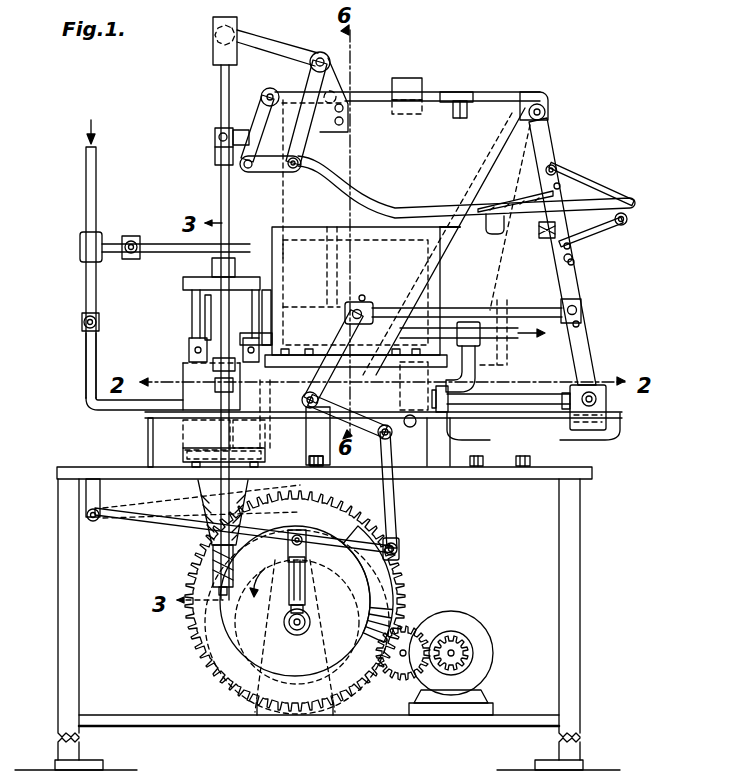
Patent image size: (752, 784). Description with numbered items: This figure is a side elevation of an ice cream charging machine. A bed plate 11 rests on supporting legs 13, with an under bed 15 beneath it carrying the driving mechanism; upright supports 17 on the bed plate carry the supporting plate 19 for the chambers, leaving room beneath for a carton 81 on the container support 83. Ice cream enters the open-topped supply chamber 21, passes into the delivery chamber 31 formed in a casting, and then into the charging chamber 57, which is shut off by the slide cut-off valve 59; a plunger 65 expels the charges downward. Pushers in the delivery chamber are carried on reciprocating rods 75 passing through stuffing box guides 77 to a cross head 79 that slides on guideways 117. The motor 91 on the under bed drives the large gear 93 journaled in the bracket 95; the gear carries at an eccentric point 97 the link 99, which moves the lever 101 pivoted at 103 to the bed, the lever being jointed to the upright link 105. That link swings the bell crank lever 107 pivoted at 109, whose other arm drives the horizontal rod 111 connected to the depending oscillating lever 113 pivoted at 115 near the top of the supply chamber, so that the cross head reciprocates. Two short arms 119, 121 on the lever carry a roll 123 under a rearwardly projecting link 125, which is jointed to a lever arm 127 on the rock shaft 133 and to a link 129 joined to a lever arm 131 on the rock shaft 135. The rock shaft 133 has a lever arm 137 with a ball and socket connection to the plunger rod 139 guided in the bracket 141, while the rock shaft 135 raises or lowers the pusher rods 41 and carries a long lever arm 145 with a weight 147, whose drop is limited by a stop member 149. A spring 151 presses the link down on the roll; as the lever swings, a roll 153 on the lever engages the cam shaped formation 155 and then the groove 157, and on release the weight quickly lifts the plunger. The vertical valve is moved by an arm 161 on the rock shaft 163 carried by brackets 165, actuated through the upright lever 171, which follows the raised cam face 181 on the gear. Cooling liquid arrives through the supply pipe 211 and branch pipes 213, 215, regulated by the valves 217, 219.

The bed plate 11 is at (90, 467).
The supporting legs 13 is at (62, 612).
The under bed or support 15 is at (392, 718).
The upright supports 17 is at (150, 427).
The supporting plate 19 is at (298, 413).
The supply chamber 21 is at (495, 110).
The delivery or forming chamber 31 is at (410, 368).
The pusher rods 41 is at (338, 256).
The charging chamber 57 is at (193, 372).
The slide cut-off valve 59 is at (262, 338).
The plunger 65 is at (212, 325).
The reciprocating rods 75 is at (523, 397).
The stuffing box guides 77 is at (447, 412).
The cross head 79 is at (604, 403).
The carton 81 is at (183, 435).
The container support 83 is at (237, 450).
The motor 91 is at (487, 643).
The large gear 93 is at (208, 662).
The bracket 95 is at (315, 606).
The eccentric mounting 97 is at (285, 622).
The link 99 is at (302, 580).
The lever 101 is at (323, 545).
The pivot 103 is at (93, 521).
The upright link 105 is at (394, 508).
The bell crank lever 107 is at (358, 412).
The pivot 109 is at (313, 397).
The horizontal rod 111 is at (457, 312).
The oscillating lever 113 is at (570, 267).
The pivot 115 is at (545, 111).
The guideways 117 is at (540, 422).
The short arm 119 is at (573, 187).
The short arm 121 is at (607, 228).
The roll 123 is at (628, 219).
The link 125 is at (393, 213).
The lever arm 127 is at (315, 172).
The link 129 is at (267, 172).
The lever arm 131 is at (258, 126).
The rock shaft 133 is at (320, 52).
The rock shaft 135 is at (264, 92).
The lever arm 137 is at (273, 50).
The plunger rod 139 is at (221, 82).
The bracket 141 is at (219, 156).
The long lever arm 145 is at (453, 92).
The weight 147 is at (405, 83).
The stop member 149 is at (461, 118).
The spring 151 is at (520, 198).
The roll 153 is at (562, 262).
The cam shaped formation 155 is at (543, 232).
The groove 157 is at (512, 231).
The arm 161 is at (272, 316).
The rock shaft 163 is at (207, 298).
The brackets 165 is at (193, 310).
The upright lever 171 is at (222, 392).
The raised cam face 181 is at (388, 578).
The supply pipe 211 is at (86, 180).
The branch pipe 213 is at (157, 248).
The branch pipe 215 is at (86, 355).
The valve 217 is at (132, 237).
The valve 219 is at (82, 322).